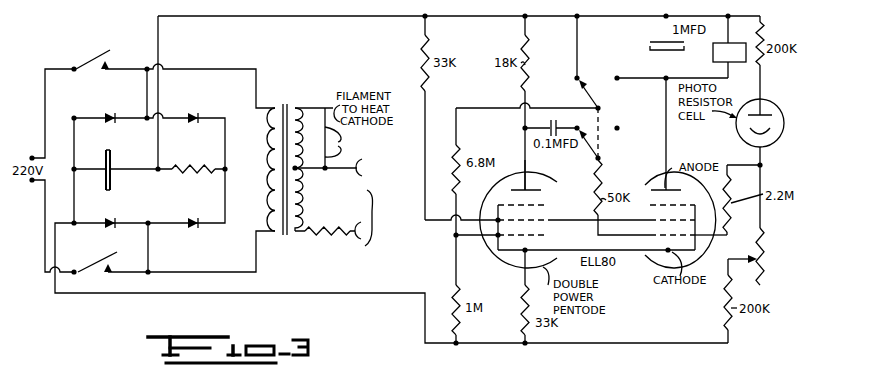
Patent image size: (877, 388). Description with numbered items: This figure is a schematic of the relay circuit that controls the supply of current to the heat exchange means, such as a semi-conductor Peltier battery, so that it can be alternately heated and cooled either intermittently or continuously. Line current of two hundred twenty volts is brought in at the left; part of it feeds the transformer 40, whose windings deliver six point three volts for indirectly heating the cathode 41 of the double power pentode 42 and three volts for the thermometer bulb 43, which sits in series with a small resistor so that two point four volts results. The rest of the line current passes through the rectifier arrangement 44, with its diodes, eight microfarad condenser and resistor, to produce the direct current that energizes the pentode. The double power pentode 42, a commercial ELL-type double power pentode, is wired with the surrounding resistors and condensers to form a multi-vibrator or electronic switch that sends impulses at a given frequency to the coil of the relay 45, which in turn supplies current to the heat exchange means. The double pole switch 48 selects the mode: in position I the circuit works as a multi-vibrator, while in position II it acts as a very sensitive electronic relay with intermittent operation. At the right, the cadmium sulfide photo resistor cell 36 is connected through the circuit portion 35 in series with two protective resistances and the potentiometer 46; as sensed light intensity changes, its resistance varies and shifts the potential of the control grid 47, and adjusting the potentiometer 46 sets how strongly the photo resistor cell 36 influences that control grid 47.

The circuit portion 35 is at (764, 86).
The photo resistor cell 36 is at (773, 100).
The transformer 40 is at (291, 104).
The cathode 41 is at (341, 142).
The double power pentode 42 is at (549, 181).
The thermometer bulb 43 is at (373, 172).
The rectifier arrangement 44 is at (224, 128).
The relay 45 is at (730, 40).
The potentiometer 46 is at (762, 242).
The control grid 47 is at (660, 232).
The double pole switch 48 is at (601, 112).